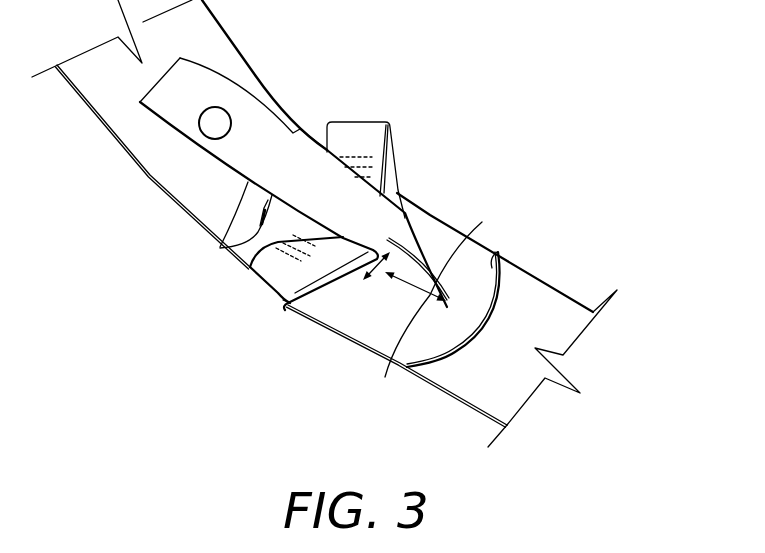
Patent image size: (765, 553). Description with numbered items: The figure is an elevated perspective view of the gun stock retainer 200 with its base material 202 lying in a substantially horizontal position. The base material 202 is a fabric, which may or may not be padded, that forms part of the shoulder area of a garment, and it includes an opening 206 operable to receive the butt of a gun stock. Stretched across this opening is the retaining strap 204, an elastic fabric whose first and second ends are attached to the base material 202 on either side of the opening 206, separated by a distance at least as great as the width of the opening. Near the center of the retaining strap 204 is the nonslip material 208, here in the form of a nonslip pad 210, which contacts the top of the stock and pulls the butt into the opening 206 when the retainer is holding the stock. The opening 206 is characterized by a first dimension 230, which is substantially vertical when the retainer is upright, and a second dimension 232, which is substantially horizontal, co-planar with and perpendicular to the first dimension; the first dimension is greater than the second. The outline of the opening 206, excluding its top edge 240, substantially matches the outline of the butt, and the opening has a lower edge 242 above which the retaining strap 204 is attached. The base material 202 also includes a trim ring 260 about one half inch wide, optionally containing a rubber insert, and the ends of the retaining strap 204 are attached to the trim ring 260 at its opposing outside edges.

The gun stock retainer 200 is at (412, 145).
The base material 202 is at (541, 294).
The retaining strap 204 is at (282, 265).
The opening 206 is at (410, 266).
The nonslip material 208 is at (338, 280).
The nonslip pad 210 is at (397, 177).
The first dimension 230 is at (420, 297).
The second dimension 232 is at (363, 280).
The top edge of the opening 240 is at (220, 247).
The lower edge 242 is at (482, 222).
The trim ring 260 is at (498, 253).